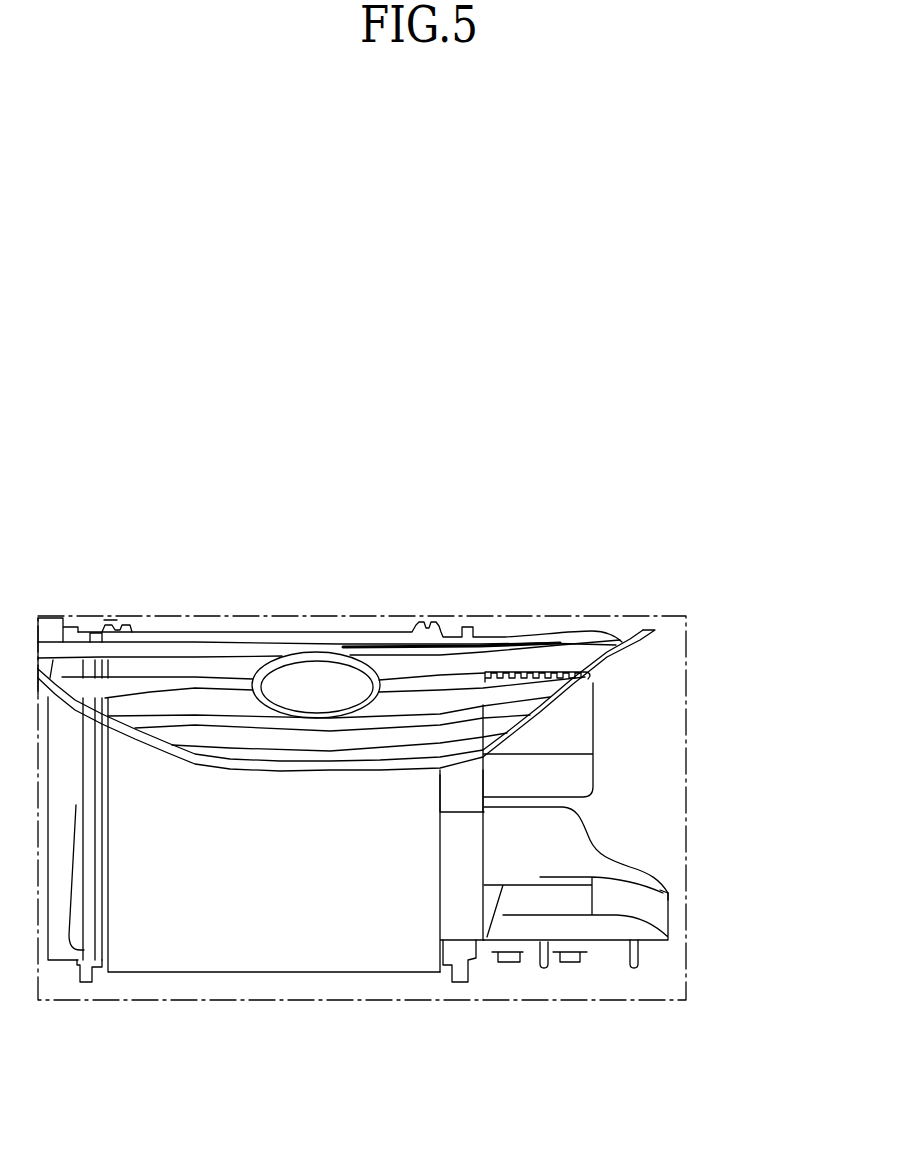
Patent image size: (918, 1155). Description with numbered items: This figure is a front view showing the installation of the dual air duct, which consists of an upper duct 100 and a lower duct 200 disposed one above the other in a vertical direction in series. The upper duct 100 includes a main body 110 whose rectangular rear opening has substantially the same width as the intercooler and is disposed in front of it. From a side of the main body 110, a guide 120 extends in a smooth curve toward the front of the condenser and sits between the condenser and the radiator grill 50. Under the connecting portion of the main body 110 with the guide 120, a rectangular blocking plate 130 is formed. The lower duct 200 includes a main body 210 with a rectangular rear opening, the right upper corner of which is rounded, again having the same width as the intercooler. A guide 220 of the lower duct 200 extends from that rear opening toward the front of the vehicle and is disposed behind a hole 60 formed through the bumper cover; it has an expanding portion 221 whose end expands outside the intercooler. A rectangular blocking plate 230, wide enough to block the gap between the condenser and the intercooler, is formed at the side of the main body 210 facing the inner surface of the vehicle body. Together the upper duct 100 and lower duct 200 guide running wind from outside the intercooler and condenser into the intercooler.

The radiator grill 50 is at (163, 697).
The hole 60 is at (257, 923).
The upper duct 100 is at (607, 697).
The main body 110 is at (583, 742).
The guide 120 is at (328, 760).
The blocking plate 130 is at (455, 782).
The lower duct 200 is at (612, 840).
The main body 210 is at (570, 818).
The guide 220 is at (552, 877).
The expanding portion 221 is at (667, 895).
The blocking plate 230 is at (453, 850).